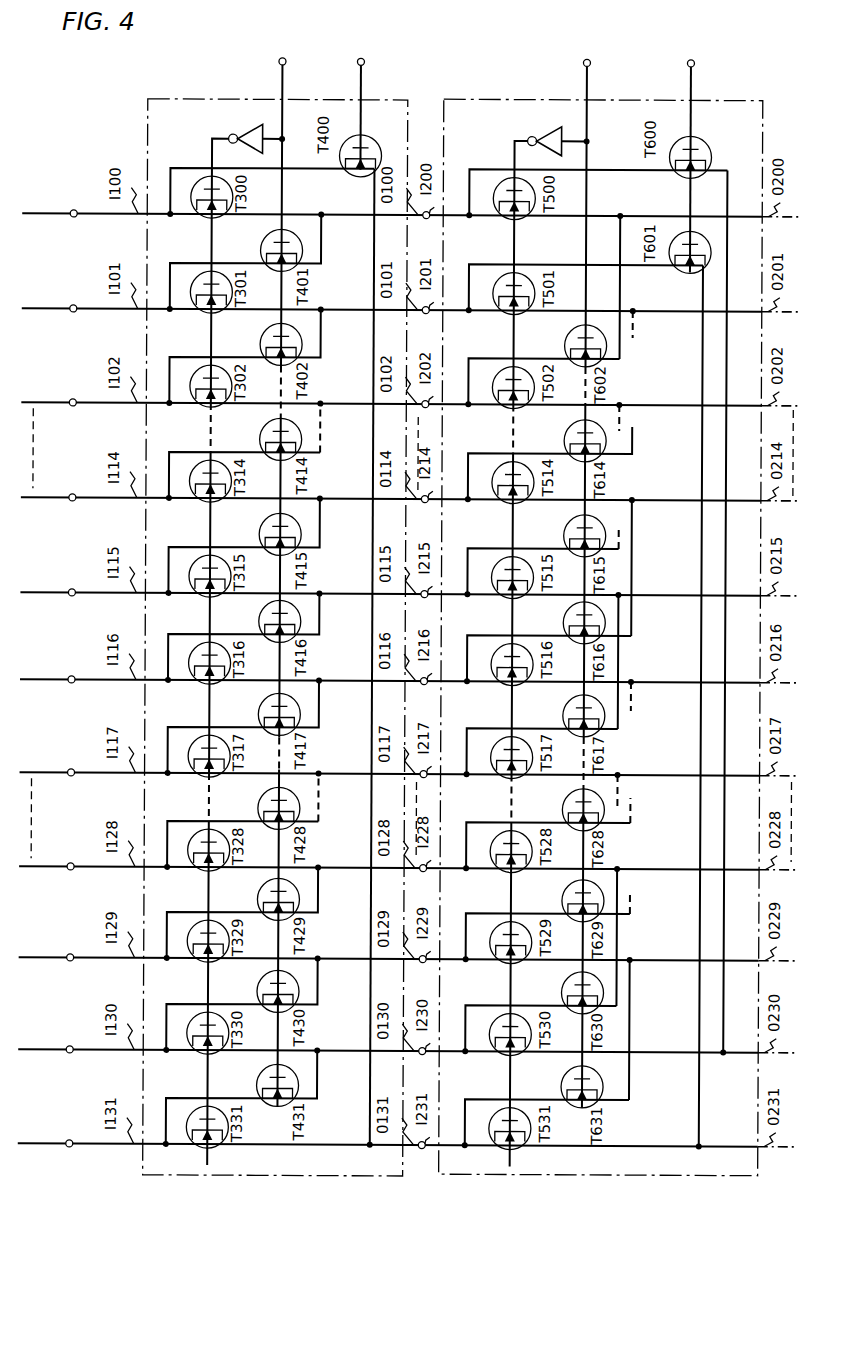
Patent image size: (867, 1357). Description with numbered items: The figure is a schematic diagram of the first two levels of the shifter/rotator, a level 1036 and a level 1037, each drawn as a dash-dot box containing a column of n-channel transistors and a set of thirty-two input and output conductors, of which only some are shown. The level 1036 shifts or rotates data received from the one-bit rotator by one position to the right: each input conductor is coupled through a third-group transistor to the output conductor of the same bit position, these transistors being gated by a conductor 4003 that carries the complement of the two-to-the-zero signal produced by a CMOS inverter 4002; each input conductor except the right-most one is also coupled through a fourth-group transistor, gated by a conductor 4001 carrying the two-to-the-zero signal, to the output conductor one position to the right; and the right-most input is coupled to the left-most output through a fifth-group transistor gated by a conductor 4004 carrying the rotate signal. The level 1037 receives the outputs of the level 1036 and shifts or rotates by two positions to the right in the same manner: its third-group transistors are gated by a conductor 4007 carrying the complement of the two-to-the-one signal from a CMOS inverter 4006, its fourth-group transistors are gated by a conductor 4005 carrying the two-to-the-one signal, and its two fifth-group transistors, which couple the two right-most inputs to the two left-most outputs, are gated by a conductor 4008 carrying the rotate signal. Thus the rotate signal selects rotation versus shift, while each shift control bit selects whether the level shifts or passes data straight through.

The level 1036 is at (182, 99).
The level 1037 is at (488, 100).
The conductor 4001 is at (283, 92).
The CMOS inverter 4002 is at (244, 133).
The conductor 4003 is at (211, 163).
The conductor 4004 is at (363, 93).
The conductor 4005 is at (590, 88).
The CMOS inverter 4006 is at (543, 135).
The conductor 4007 is at (514, 165).
The conductor 4008 is at (697, 92).